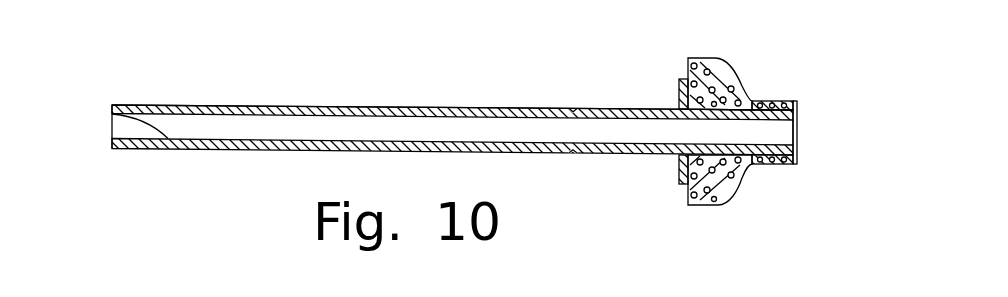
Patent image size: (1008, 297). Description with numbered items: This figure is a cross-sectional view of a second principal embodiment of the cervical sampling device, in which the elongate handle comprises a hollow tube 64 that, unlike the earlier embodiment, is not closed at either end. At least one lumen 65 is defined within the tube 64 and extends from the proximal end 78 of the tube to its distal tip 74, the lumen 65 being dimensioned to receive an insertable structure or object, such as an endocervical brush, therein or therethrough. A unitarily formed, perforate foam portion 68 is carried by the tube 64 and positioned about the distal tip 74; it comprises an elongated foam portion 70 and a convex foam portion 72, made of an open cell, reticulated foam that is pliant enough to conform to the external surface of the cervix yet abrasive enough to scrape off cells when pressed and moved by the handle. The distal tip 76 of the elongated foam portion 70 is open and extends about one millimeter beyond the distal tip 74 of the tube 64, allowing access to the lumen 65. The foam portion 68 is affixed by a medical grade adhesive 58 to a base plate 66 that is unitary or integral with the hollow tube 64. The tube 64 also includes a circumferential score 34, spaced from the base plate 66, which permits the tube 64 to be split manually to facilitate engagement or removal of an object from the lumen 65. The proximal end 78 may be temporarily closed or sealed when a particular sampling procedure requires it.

The circumferential score 34 is at (573, 114).
The hollow tube 64 is at (345, 107).
The lumen 65 is at (112, 116).
The proximal end 78 is at (111, 131).
The convex foam portion 72 is at (722, 63).
The elongated foam portion 70 is at (772, 101).
The distal tip of the elongated foam portion 76 is at (797, 101).
The distal tip 74 is at (797, 126).
The unitarily formed foam portion 68 is at (728, 182).
The medical grade adhesive 58 is at (760, 165).
The base plate 66 is at (678, 167).